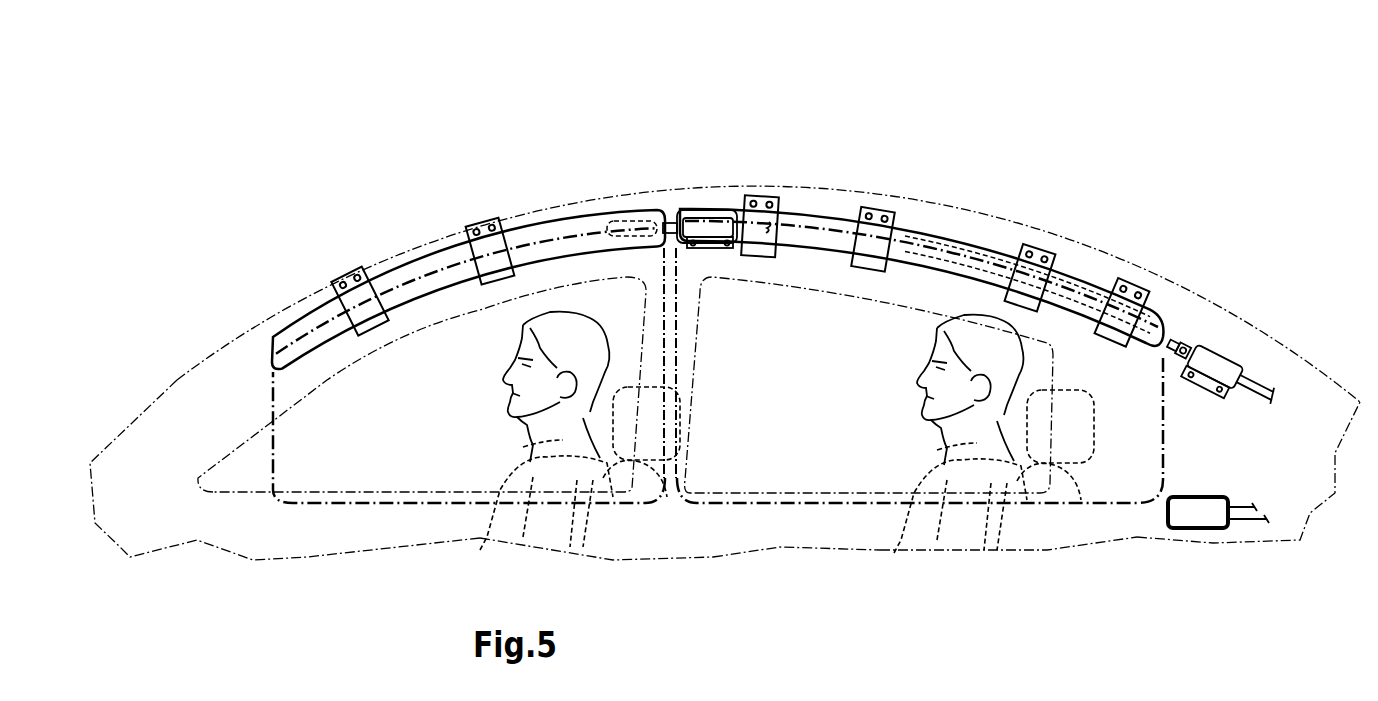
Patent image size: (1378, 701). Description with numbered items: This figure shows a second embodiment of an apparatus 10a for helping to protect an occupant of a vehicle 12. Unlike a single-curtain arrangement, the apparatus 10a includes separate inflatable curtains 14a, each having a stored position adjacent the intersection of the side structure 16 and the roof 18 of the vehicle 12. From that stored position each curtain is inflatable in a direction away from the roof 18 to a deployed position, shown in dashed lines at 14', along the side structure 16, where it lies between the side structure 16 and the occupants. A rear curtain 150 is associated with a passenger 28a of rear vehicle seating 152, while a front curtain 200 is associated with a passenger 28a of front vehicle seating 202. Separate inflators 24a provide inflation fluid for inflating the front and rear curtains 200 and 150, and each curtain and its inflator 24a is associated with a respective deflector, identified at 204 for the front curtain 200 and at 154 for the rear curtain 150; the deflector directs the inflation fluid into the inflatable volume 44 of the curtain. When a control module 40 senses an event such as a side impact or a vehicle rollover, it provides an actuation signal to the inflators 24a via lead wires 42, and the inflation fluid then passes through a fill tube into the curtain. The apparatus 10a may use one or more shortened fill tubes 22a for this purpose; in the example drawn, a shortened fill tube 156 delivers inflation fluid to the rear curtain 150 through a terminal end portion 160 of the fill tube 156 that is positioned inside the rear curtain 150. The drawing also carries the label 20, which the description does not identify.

The apparatus 10a is at (650, 72).
The vehicle 12 is at (312, 292).
The roof 18 is at (820, 197).
The deployed position of inflatable curtain 14' is at (431, 447).
The side structure 16 is at (716, 528).
The inflatable volume 44 is at (747, 443).
The front vehicle seating 202 is at (617, 540).
The rear vehicle seating 152 is at (1030, 531).
The front curtain 200 is at (433, 250).
The rear curtain 150 is at (843, 223).
The terminal end portion 160 is at (925, 267).
The deflector 154 is at (945, 238).
The deflector 204 is at (622, 215).
The inflatable curtains 14a is at (388, 268).
The inflators 24a is at (705, 227).
The shortened fill tubes 22a is at (1197, 347).
The shortened fill tube 156 is at (1236, 284).
The lead wires 42 is at (1266, 380).
The control module 40 is at (1197, 520).
The passenger 28a is at (480, 397).
The seats 20 is at (403, 462).